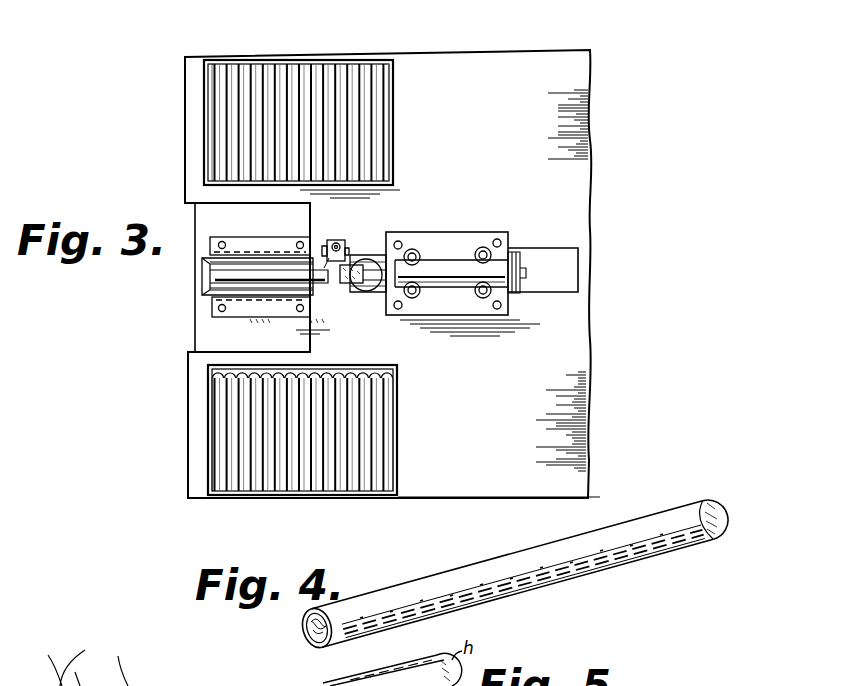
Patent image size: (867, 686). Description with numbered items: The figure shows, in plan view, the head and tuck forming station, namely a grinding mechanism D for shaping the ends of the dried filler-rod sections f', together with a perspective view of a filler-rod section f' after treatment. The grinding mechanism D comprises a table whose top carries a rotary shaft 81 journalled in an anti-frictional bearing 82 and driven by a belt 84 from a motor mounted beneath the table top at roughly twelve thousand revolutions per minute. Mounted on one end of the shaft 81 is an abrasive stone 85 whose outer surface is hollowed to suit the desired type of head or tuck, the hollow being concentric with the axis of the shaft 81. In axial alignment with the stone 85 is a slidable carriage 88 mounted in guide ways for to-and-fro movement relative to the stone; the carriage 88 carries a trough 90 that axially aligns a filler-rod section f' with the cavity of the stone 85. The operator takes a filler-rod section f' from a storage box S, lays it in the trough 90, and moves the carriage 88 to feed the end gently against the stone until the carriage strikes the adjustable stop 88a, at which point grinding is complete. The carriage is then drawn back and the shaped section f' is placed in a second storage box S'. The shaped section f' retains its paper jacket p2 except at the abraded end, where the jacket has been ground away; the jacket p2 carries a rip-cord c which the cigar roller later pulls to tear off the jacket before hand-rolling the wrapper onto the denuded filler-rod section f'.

In FIG. 3, the grinding mechanism D is at (183, 80).
In FIG. 3, the storage box S is at (309, 122).
In FIG. 3, the storage box S' is at (317, 413).
In FIG. 3, the filler-rod section f' is at (269, 277).
In FIG. 4, the filler-rod section f' is at (299, 639).
In FIG. 3, the tube end cap h is at (245, 369).
In FIG. 4, the tube end cap h is at (712, 503).
In FIG. 3, the trough 90 is at (210, 290).
In FIG. 3, the slidable carriage 88 is at (334, 240).
In FIG. 3, the adjustable stop 88a is at (340, 242).
In FIG. 3, the abrasive stone 85 is at (340, 285).
In FIG. 3, the rotary shaft 81 is at (375, 256).
In FIG. 3, the anti-frictional bearing 82 is at (446, 264).
In FIG. 3, the belt 84 is at (516, 250).
In FIG. 4, the paper jacket p2 is at (558, 584).
In FIG. 4, the rip-cord c is at (304, 620).